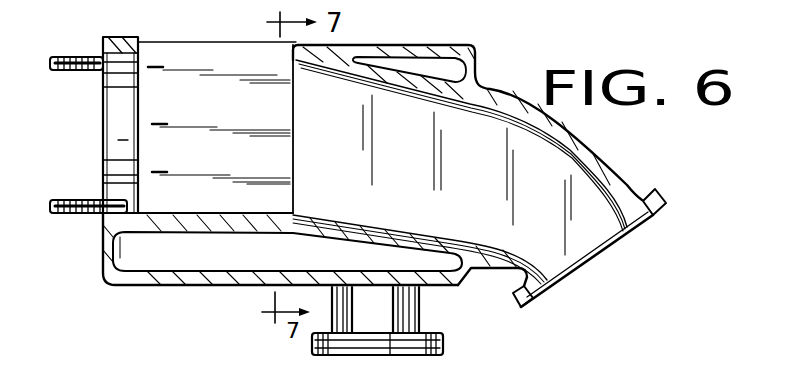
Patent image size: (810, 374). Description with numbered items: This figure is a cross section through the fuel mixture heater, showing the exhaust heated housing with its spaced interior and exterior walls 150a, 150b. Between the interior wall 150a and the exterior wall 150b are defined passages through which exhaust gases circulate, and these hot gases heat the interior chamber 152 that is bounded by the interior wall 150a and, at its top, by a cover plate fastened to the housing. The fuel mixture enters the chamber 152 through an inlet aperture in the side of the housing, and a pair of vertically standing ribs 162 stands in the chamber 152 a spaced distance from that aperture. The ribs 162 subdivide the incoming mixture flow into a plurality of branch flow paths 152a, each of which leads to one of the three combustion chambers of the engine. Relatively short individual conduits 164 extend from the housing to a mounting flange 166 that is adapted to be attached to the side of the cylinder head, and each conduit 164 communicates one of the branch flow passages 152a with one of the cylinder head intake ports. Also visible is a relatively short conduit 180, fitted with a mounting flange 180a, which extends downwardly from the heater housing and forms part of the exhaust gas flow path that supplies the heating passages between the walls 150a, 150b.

The interior wall 150a is at (373, 237).
The exterior wall 150b is at (203, 283).
The interior chamber 152 is at (240, 162).
The branch flow paths 152a is at (500, 166).
The vertically standing ribs 162 is at (293, 106).
The individual conduits 164 is at (594, 166).
The mounting flange 166 is at (640, 191).
The conduit 180 is at (378, 312).
The mounting flange 180a is at (432, 365).